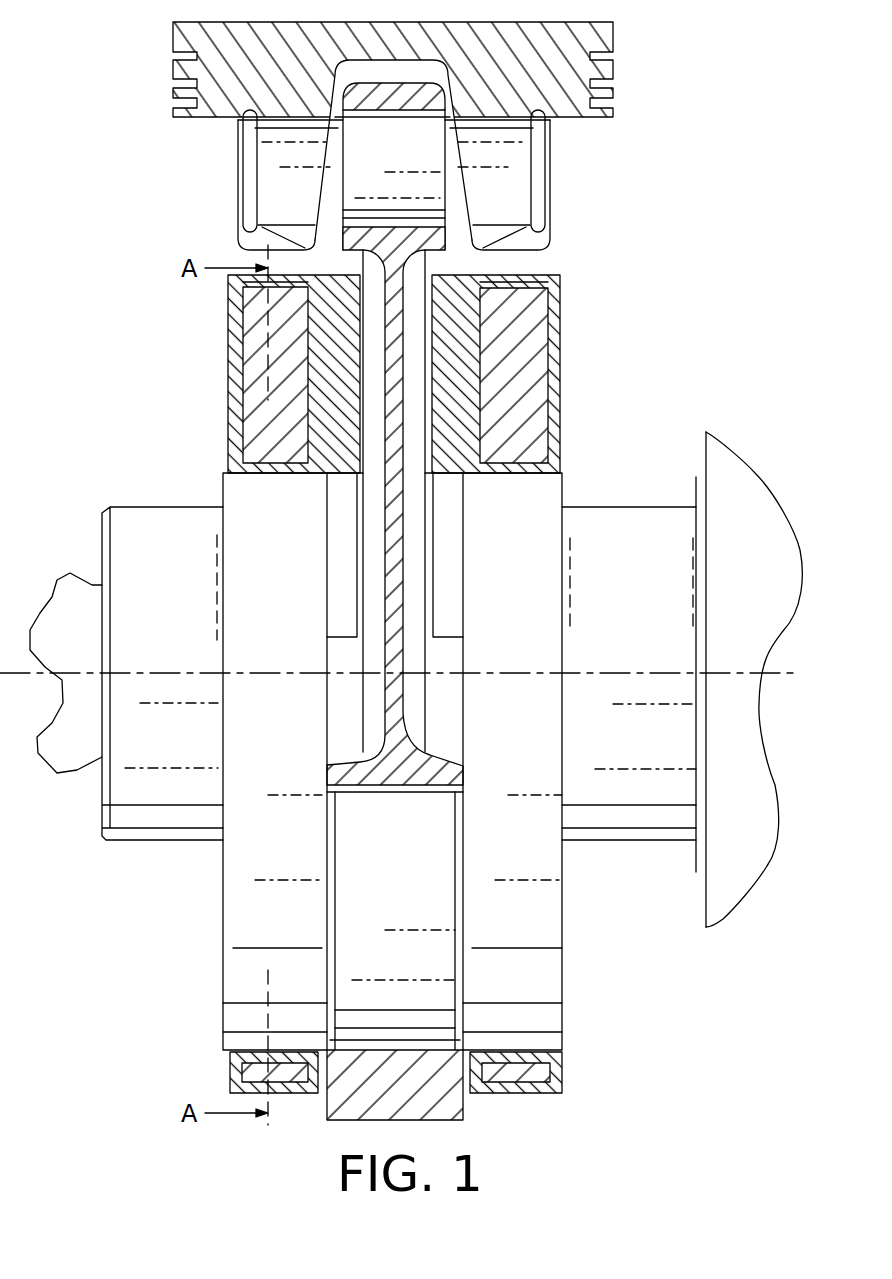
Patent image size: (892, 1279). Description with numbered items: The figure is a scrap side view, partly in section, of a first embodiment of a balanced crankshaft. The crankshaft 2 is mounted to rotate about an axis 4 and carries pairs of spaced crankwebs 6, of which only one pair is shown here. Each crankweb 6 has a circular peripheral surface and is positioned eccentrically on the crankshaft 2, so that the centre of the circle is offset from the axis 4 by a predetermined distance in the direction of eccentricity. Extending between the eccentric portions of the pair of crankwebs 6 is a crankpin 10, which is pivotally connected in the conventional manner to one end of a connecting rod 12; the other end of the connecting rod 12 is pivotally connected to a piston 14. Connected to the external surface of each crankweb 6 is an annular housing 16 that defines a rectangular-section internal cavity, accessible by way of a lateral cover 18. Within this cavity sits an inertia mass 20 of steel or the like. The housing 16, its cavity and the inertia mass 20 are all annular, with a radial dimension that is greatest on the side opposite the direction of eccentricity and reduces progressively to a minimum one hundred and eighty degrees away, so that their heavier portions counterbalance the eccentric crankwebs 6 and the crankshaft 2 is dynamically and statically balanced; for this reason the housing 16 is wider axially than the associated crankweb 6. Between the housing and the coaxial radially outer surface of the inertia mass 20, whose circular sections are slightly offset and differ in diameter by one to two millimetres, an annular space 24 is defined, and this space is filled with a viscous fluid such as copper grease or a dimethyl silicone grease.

The crankshaft 2 is at (648, 515).
The axis 4 is at (788, 675).
The crankweb 6 is at (556, 893).
The crankpin 10 is at (463, 1036).
The connecting rod 12 is at (392, 492).
The piston 14 is at (614, 37).
The annular housing 16 is at (432, 353).
The lateral cover 18 is at (553, 318).
The inertia mass 20 is at (532, 369).
The annular space 24 is at (540, 282).